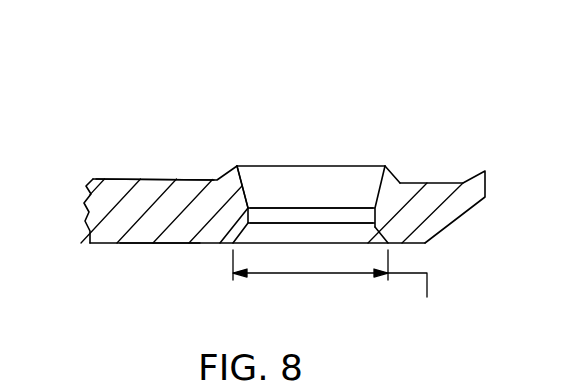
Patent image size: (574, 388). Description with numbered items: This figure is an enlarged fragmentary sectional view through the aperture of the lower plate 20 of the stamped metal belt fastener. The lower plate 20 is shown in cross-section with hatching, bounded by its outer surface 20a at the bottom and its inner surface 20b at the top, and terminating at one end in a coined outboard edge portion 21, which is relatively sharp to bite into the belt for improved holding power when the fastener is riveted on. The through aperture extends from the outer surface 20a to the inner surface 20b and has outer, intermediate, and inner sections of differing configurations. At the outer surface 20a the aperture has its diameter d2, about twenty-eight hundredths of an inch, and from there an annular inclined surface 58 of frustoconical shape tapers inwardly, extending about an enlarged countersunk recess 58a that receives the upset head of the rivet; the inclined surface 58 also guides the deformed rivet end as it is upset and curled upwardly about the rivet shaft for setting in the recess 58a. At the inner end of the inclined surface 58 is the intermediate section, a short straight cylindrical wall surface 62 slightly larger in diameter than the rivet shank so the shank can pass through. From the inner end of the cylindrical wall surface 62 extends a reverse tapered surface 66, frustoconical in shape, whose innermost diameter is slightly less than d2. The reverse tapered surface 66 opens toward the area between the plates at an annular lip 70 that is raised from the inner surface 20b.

The lower plate 20 is at (108, 230).
The outer surface of lower plate 20a is at (160, 246).
The inner surface of lower plate 20b is at (153, 178).
The coined outboard edge portion 21 is at (468, 194).
The annular inclined surface 58 is at (377, 232).
The enlarged countersunk recess 58a is at (312, 230).
The straight cylindrical wall surface 62 is at (258, 212).
The reverse tapered surface 66 is at (249, 172).
The annular lip 70 is at (393, 170).
The aperture diameter d2 is at (340, 293).